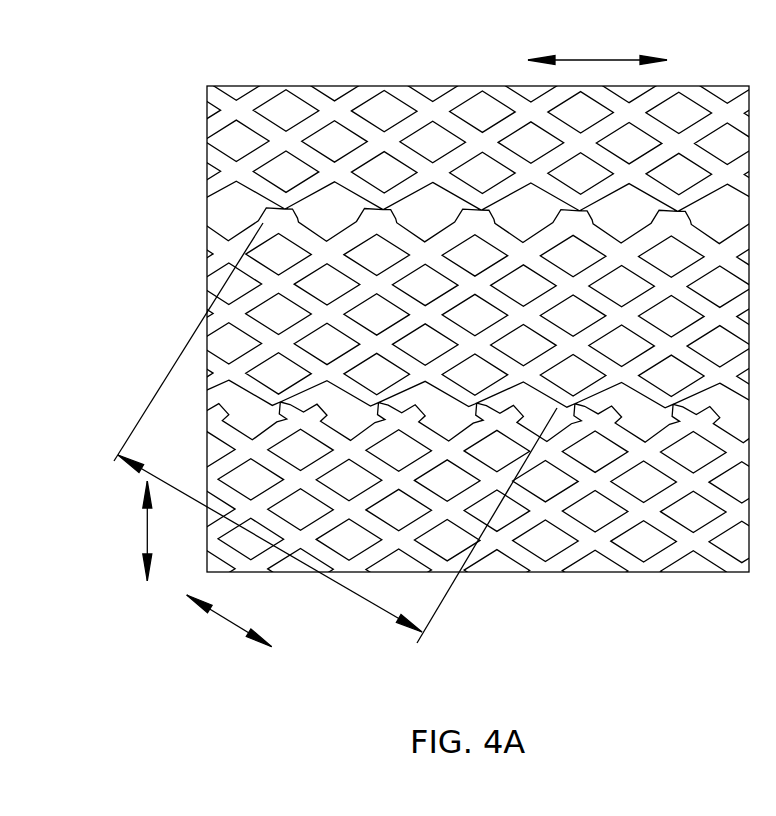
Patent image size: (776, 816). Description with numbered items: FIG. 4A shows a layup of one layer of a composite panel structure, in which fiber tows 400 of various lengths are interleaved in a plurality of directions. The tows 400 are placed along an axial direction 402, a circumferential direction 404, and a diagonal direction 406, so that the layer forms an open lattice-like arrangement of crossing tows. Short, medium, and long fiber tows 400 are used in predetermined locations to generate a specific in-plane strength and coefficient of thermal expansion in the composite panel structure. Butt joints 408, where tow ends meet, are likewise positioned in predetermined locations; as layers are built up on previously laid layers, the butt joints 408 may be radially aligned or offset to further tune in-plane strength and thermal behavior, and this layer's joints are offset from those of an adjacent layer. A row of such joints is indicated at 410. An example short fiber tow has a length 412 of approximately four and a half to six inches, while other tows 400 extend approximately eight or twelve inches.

The fiber tows 400 is at (460, 122).
The axial direction 402 is at (600, 60).
The circumferential direction 404 is at (147, 532).
The diagonal direction 406 is at (237, 628).
The butt joints 408 is at (612, 400).
The dislocation row 410 is at (546, 396).
The length 412 is at (373, 603).